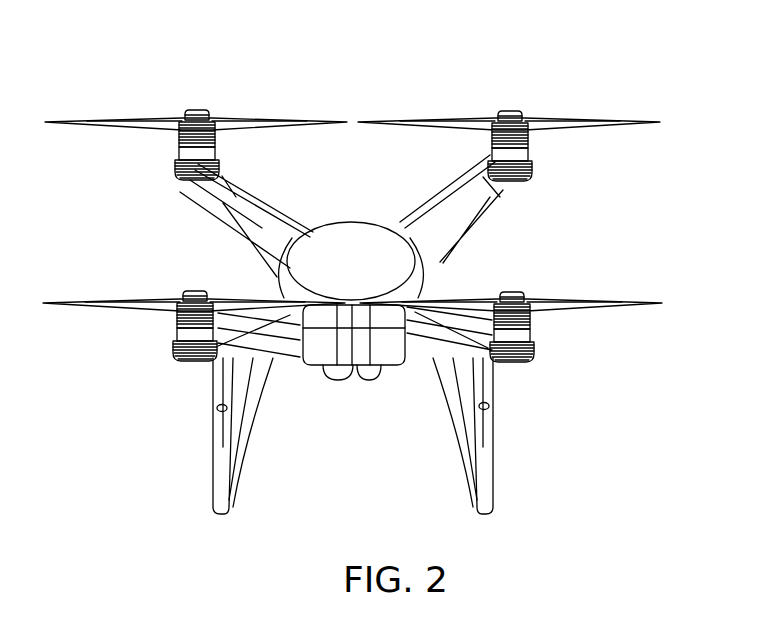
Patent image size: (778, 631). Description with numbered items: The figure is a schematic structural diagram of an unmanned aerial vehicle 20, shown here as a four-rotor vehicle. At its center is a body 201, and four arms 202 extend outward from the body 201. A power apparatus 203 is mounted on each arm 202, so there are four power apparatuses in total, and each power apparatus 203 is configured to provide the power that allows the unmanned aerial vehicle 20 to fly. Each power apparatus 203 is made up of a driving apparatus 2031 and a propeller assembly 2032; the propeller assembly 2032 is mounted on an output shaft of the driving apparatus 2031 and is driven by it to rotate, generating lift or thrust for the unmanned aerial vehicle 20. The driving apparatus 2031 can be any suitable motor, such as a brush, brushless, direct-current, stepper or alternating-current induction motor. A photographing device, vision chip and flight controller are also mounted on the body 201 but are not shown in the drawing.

The unmanned aerial vehicle 20 is at (428, 70).
The body 201 is at (378, 277).
The arm 202 is at (256, 228).
The power apparatus 203 is at (660, 77).
The driving apparatus 2031 is at (540, 158).
The propeller assembly 2032 is at (542, 123).